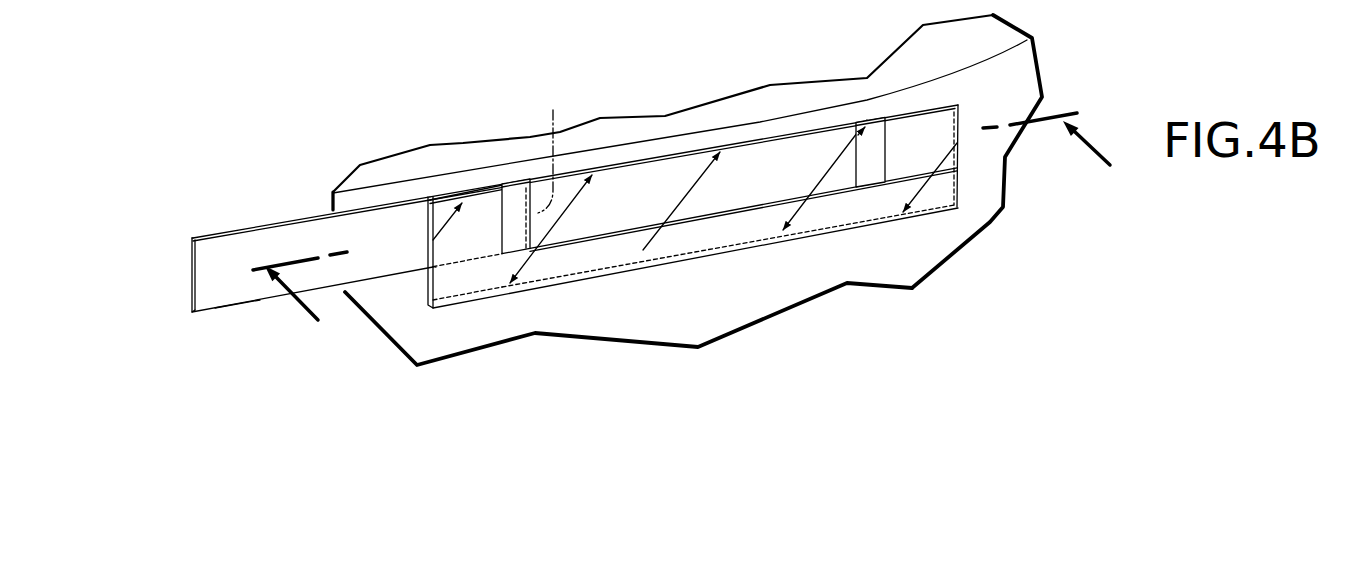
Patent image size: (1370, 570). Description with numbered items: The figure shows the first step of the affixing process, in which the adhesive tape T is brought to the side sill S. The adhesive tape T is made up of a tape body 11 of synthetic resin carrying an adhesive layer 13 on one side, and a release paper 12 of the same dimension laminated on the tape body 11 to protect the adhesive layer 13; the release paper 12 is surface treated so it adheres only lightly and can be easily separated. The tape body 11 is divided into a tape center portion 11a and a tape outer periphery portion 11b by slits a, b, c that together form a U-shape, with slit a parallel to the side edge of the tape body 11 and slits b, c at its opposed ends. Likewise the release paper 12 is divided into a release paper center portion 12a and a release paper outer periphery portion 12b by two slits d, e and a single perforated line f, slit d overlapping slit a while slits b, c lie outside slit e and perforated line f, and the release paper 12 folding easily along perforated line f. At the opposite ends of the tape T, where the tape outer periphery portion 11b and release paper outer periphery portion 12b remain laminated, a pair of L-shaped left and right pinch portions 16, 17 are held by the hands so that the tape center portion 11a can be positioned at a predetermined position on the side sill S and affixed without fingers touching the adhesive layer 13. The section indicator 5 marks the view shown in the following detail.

The tape body 11 is at (594, 290).
The tape center portion 11a is at (767, 157).
The tape outer periphery portion 11b is at (728, 233).
The release paper 12 is at (396, 199).
The release paper center portion 12a is at (270, 240).
The release paper outer periphery portion 12b is at (426, 277).
The adhesive layer 13 is at (653, 153).
The left pinch portion 16 is at (480, 275).
The right pinch portion 17 is at (921, 176).
The section line / view direction of FIG. 5 is at (701, 240).
The slit a is at (628, 232).
The slit b is at (885, 163).
The slit c is at (502, 221).
The slit d is at (238, 305).
The slit e is at (190, 272).
The perforated line f is at (548, 149).
The side sill S is at (818, 277).
The adhesive tape T is at (904, 247).